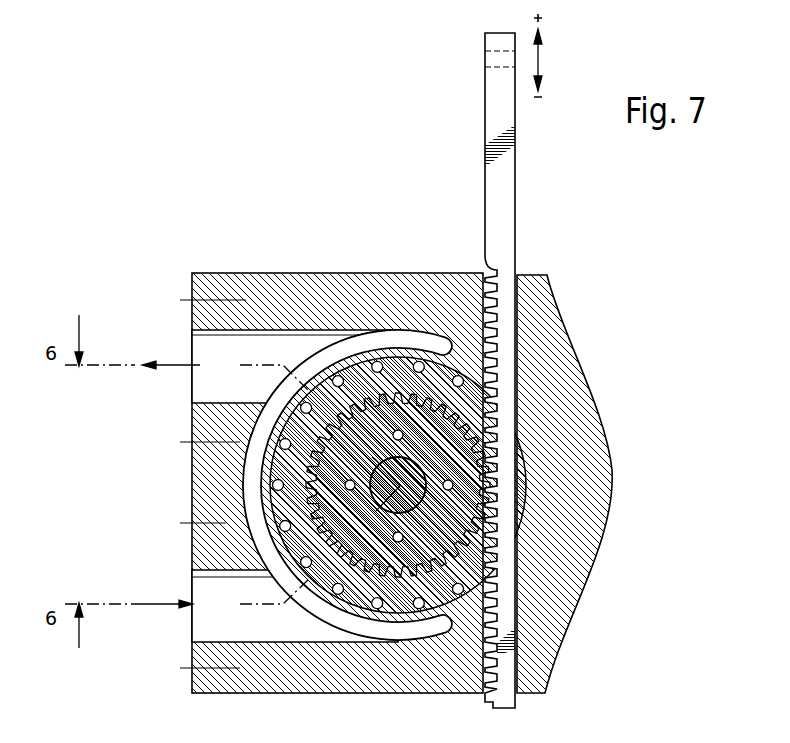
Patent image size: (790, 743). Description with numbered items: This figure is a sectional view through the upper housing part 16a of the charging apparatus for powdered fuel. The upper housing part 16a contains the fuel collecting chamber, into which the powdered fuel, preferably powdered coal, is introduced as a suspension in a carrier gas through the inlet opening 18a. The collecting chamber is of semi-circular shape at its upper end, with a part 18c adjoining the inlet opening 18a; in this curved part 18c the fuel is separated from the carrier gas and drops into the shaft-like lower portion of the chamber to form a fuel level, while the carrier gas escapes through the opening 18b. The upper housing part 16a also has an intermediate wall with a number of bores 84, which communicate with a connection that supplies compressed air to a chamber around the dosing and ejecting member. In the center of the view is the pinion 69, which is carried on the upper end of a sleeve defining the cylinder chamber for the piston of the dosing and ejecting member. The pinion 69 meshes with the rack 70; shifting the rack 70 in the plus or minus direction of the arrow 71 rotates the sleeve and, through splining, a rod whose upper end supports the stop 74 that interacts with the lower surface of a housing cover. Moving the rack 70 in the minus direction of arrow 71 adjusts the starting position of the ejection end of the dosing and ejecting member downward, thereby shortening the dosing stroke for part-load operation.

The rack 70 is at (508, 197).
The arrow 71 is at (540, 59).
The bores 84 is at (419, 362).
The stop 74 is at (410, 473).
The pinion 69 is at (468, 478).
The upper housing part 16a is at (598, 428).
The opening 18b is at (196, 390).
The part adjoining the inlet opening 18c is at (245, 490).
The inlet opening 18a is at (203, 631).